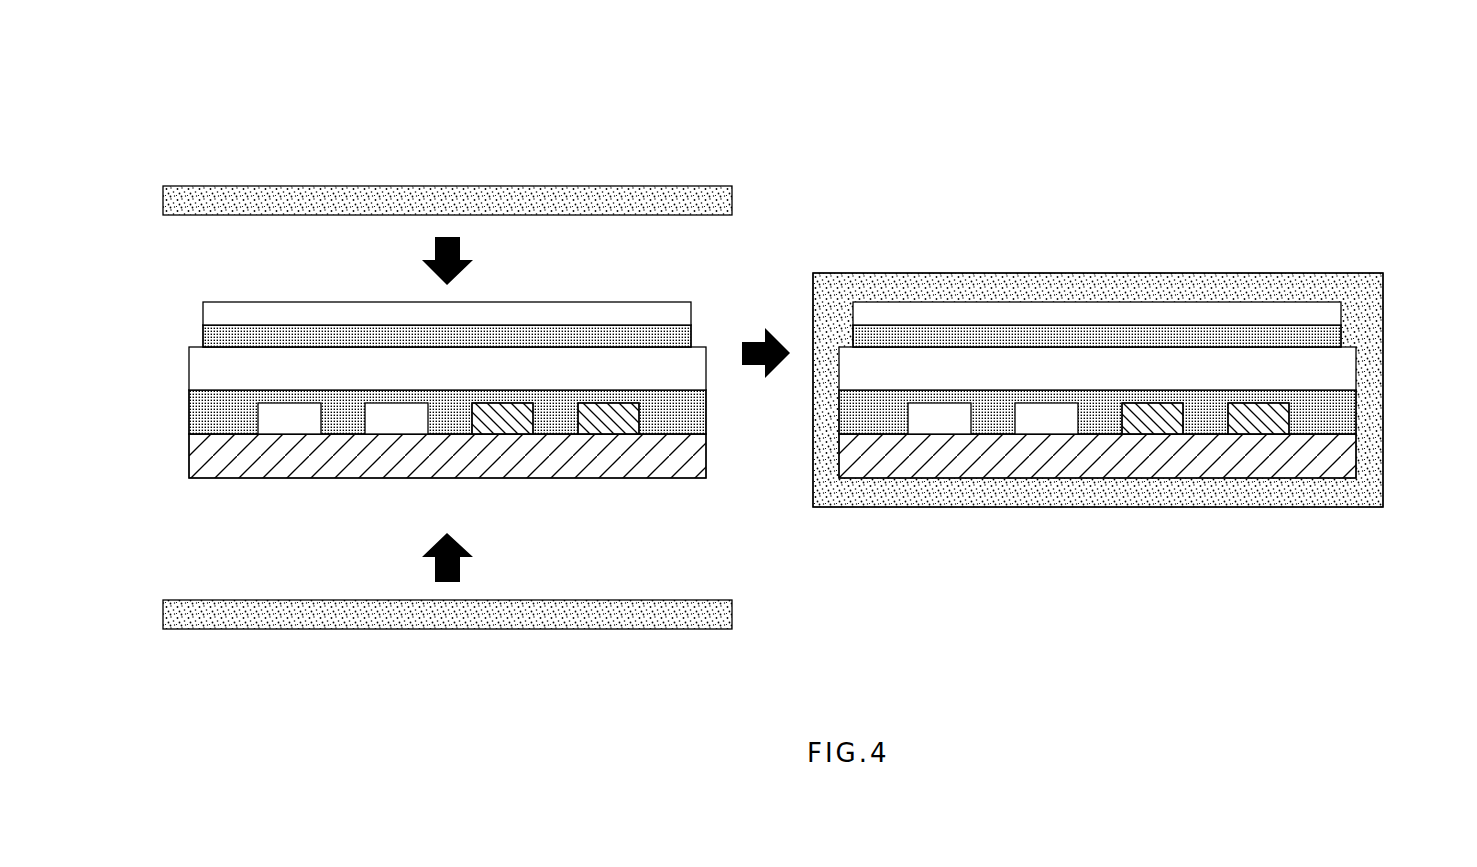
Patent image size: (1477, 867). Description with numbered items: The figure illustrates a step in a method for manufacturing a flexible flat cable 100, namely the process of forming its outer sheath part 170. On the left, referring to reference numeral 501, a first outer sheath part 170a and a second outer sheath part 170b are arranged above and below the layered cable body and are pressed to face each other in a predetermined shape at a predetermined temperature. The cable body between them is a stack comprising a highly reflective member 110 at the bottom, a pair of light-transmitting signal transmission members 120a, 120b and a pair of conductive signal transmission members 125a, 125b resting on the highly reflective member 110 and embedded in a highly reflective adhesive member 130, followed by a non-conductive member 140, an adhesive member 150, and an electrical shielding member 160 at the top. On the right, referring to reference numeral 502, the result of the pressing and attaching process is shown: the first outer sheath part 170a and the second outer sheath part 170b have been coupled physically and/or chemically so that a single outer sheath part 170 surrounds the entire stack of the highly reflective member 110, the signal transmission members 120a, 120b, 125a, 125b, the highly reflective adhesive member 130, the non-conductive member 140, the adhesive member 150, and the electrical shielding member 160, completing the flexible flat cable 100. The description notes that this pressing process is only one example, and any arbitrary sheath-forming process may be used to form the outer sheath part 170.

The flexible flat cable 100 is at (1320, 266).
The highly reflective member 110 is at (200, 457).
The light-transmitting signal transmission member 120a is at (287, 420).
The light-transmitting signal transmission member 120b is at (394, 420).
The conductive signal transmission member 125a is at (500, 420).
The conductive signal transmission member 125b is at (607, 420).
The highly reflective adhesive member 130 is at (200, 410).
The non-conductive member 140 is at (200, 367).
The adhesive member 150 is at (213, 337).
The electrical shielding member 160 is at (213, 312).
The outer sheath part 170 is at (837, 287).
The first outer sheath part 170a is at (168, 201).
The second outer sheath part 170b is at (168, 614).
The pressing step 501 is at (449, 134).
The pressed/attached result 502 is at (1100, 198).